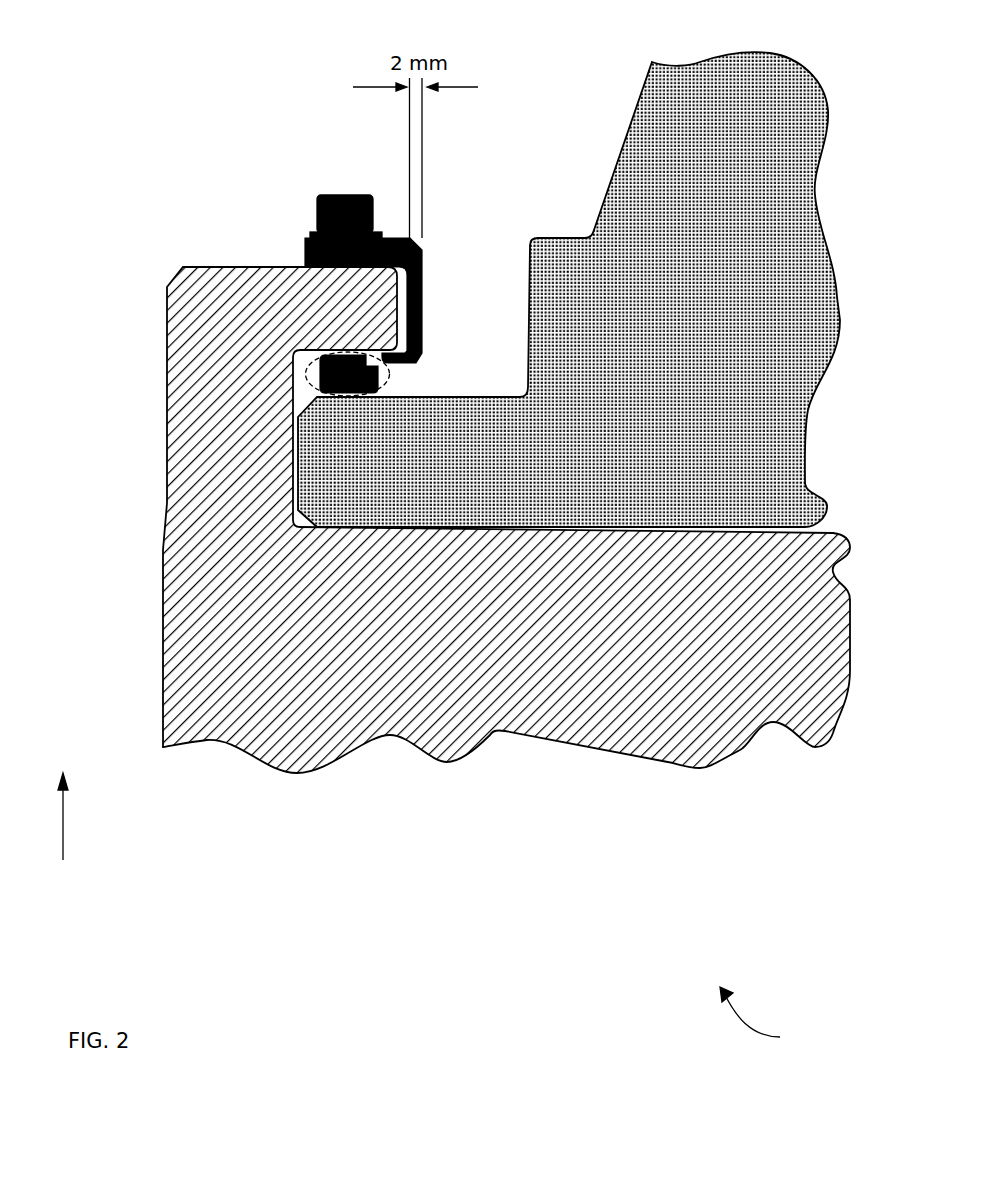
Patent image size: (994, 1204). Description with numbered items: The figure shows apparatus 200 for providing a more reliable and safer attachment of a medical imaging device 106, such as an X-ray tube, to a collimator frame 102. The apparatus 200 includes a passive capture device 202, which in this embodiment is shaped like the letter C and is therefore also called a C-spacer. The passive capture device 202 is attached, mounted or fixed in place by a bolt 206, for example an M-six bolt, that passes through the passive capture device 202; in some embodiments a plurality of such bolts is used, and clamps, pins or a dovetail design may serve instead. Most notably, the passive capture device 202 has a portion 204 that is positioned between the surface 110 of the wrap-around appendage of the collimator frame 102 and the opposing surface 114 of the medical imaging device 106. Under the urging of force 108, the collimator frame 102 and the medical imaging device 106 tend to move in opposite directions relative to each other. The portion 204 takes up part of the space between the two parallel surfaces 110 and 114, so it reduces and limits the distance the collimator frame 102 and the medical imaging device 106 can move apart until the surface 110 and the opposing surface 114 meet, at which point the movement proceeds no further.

The collimator frame 102 is at (172, 588).
The medical imaging device 106 is at (660, 93).
The force 108 is at (63, 827).
The surface 110 is at (350, 352).
The opposing surface 114 is at (347, 397).
The apparatus 200 is at (780, 1037).
The passive capture device 202 is at (307, 253).
The portion 204 is at (340, 352).
The bolt 206 is at (345, 195).